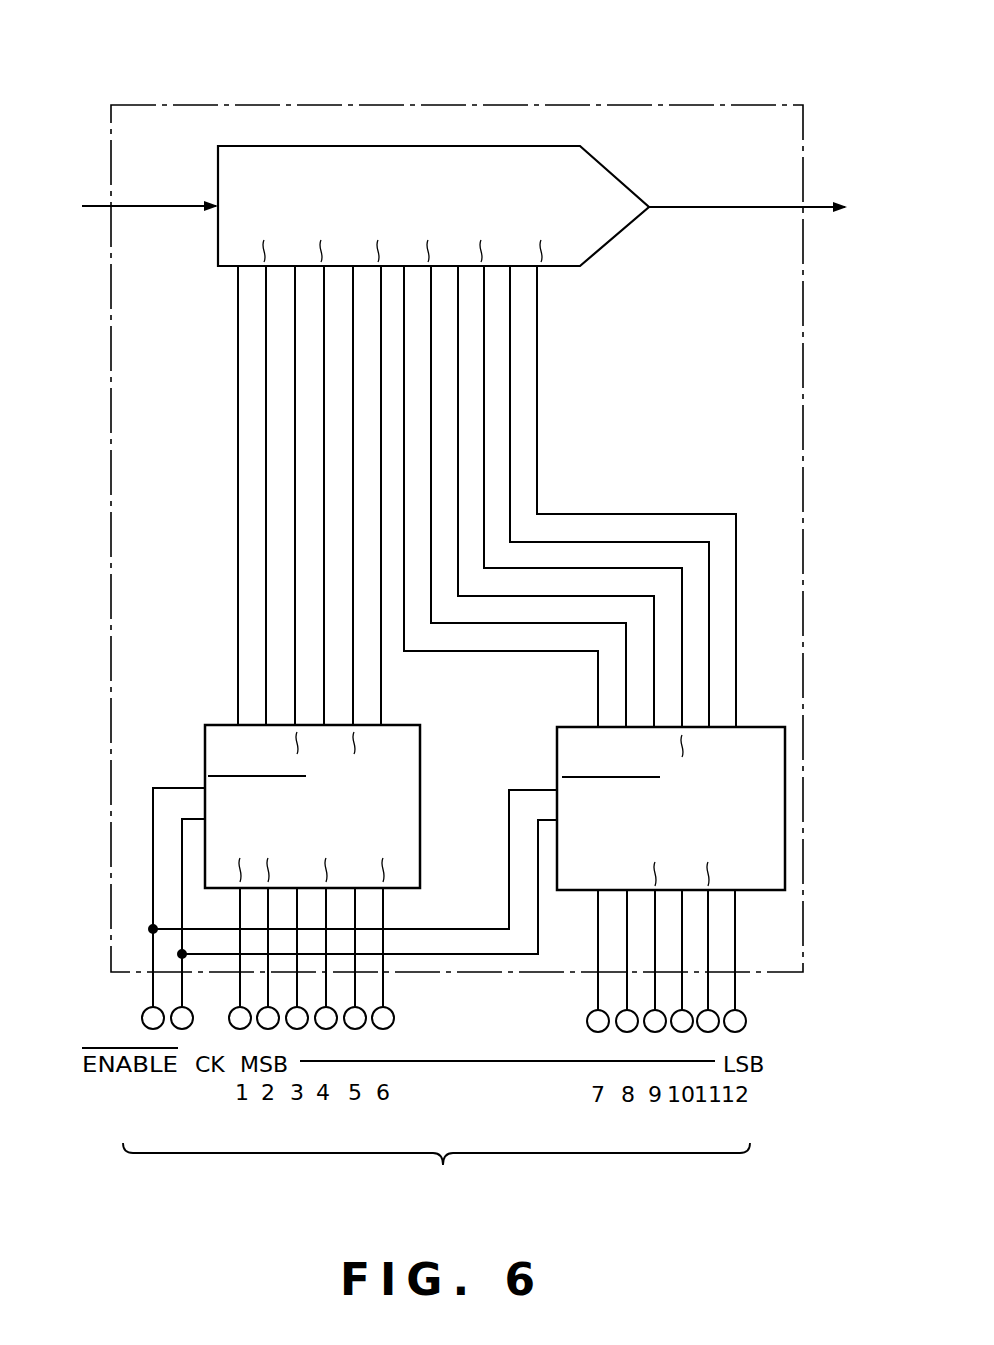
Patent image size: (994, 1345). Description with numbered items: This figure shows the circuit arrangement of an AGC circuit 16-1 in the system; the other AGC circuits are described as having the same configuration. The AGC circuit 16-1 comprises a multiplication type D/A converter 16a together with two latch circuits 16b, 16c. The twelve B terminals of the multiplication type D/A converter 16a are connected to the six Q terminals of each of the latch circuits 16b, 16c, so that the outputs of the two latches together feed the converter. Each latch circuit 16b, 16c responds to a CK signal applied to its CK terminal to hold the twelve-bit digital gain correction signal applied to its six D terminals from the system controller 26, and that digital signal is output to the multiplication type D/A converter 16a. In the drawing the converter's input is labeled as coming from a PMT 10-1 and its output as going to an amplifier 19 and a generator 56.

The AGC circuit 16-1 is at (111, 490).
The multiplication type D/A converter 16a is at (600, 268).
The latch circuit 16b is at (422, 742).
The latch circuit 16c is at (786, 729).
The photomultiplier tube 10-1 is at (92, 202).
The amplifier 19 is at (748, 118).
The generator 56 is at (820, 206).
The system controller 26 is at (436, 1173).